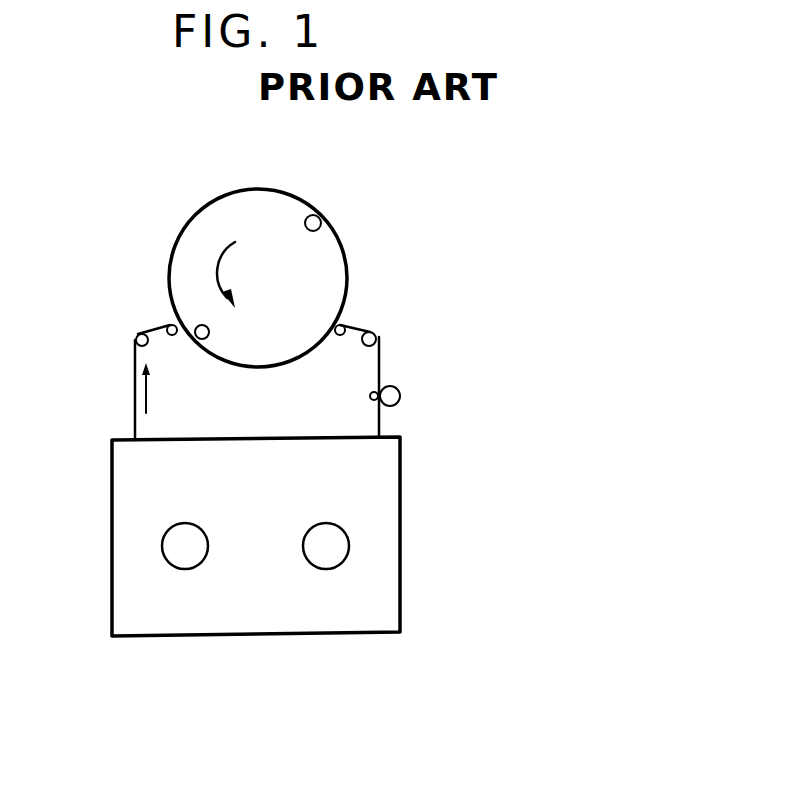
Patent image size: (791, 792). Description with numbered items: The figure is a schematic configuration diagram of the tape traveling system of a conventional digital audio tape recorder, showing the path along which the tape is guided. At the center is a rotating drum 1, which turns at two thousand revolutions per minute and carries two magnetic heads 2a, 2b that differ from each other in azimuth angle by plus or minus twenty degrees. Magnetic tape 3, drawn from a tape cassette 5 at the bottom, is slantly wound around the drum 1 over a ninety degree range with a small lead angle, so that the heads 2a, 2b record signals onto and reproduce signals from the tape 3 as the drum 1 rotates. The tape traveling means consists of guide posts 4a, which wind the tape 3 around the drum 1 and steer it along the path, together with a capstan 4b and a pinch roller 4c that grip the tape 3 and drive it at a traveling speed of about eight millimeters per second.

The rotating drum 1 is at (289, 190).
The magnetic head 2a is at (319, 216).
The magnetic head 2b is at (201, 325).
The magnetic tape 3 is at (135, 399).
The guide posts 4a is at (168, 325).
The capstan 4b is at (369, 396).
The pinch roller 4c is at (401, 395).
The tape cassette 5 is at (383, 470).